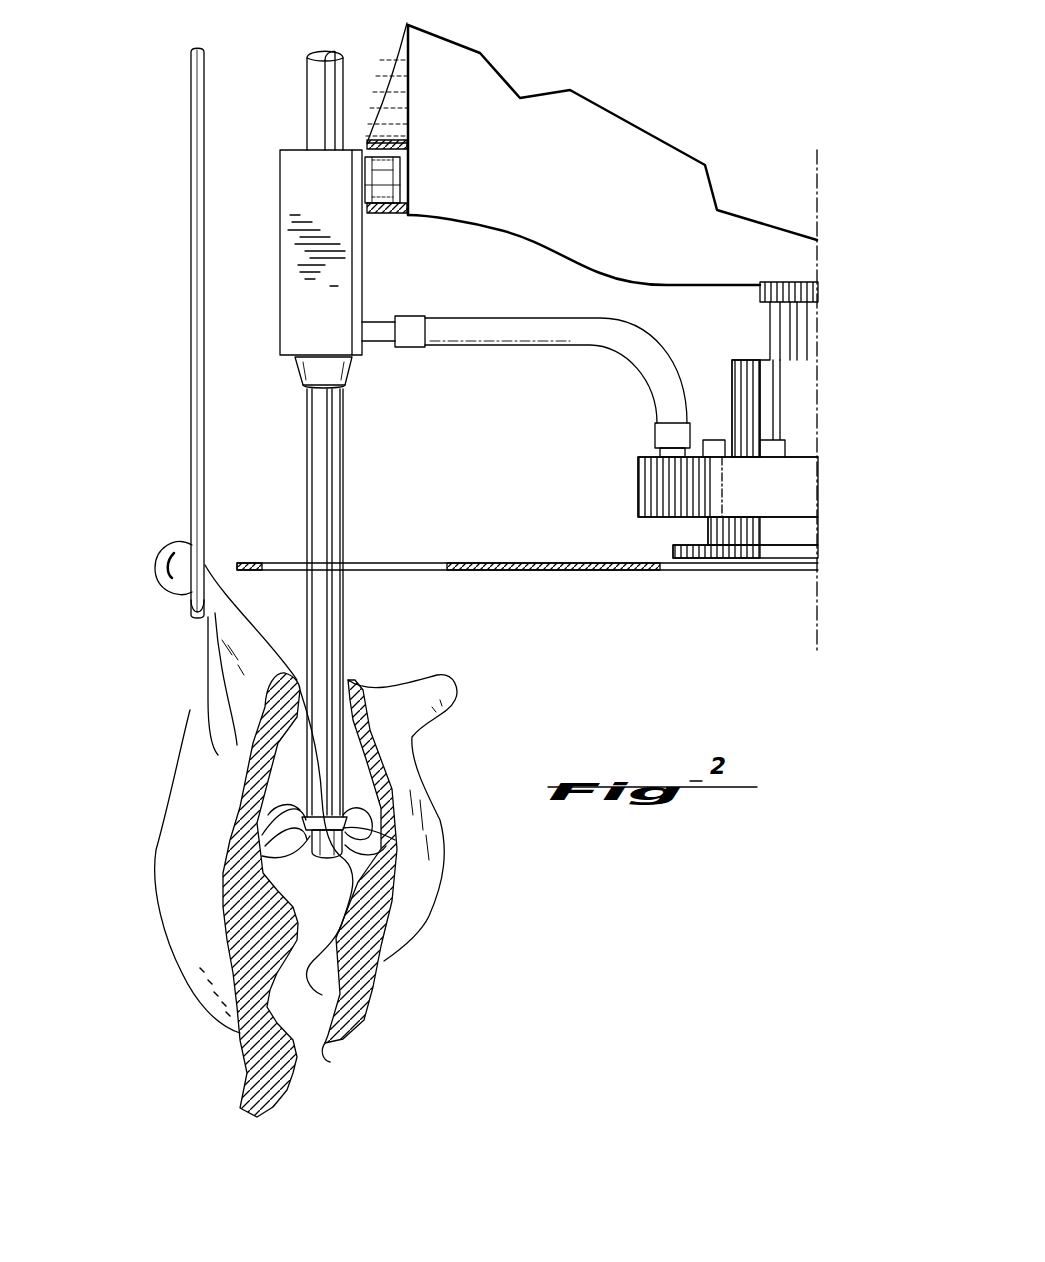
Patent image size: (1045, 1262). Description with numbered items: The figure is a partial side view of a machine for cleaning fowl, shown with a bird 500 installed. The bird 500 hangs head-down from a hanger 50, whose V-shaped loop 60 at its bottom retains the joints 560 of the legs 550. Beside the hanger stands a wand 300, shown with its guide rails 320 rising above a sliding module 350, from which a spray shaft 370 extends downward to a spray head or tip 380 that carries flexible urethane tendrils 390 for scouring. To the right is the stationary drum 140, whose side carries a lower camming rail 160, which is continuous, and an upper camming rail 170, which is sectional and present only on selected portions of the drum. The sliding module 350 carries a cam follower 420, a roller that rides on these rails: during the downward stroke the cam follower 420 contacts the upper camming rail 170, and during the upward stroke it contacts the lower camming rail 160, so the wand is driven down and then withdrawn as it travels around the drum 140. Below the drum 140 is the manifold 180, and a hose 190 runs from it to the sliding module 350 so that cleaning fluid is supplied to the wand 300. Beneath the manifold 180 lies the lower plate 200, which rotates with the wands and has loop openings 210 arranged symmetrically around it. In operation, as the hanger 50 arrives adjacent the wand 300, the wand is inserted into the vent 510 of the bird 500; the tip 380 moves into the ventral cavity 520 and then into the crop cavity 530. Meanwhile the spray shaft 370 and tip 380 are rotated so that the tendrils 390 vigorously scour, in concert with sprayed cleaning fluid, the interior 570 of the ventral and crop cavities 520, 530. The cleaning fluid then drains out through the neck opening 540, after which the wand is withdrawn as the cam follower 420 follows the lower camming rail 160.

The hanger 50 is at (190, 258).
The loop 60 is at (197, 603).
The drum 140 is at (595, 135).
The lower camming rail 160 is at (397, 215).
The upper camming rail 170 is at (407, 107).
The manifold 180 is at (642, 470).
The hose 190 is at (530, 346).
The lower plate 200 is at (415, 563).
The loop opening 210 is at (372, 562).
The wand 300 is at (280, 308).
The guide rail 320 is at (318, 98).
The sliding module 350 is at (280, 232).
The spray shaft 370 is at (333, 600).
The spray head or tip 380 is at (322, 852).
The tendrils 390 is at (345, 850).
The cam follower 420 is at (393, 207).
The bird 500 is at (147, 890).
The vent 510 is at (348, 674).
The ventral cavity 520 is at (321, 974).
The crop cavity 530 is at (366, 1022).
The neck opening 540 is at (328, 1037).
The legs 550 is at (240, 643).
The joints 560 is at (155, 578).
The interior 570 is at (273, 873).